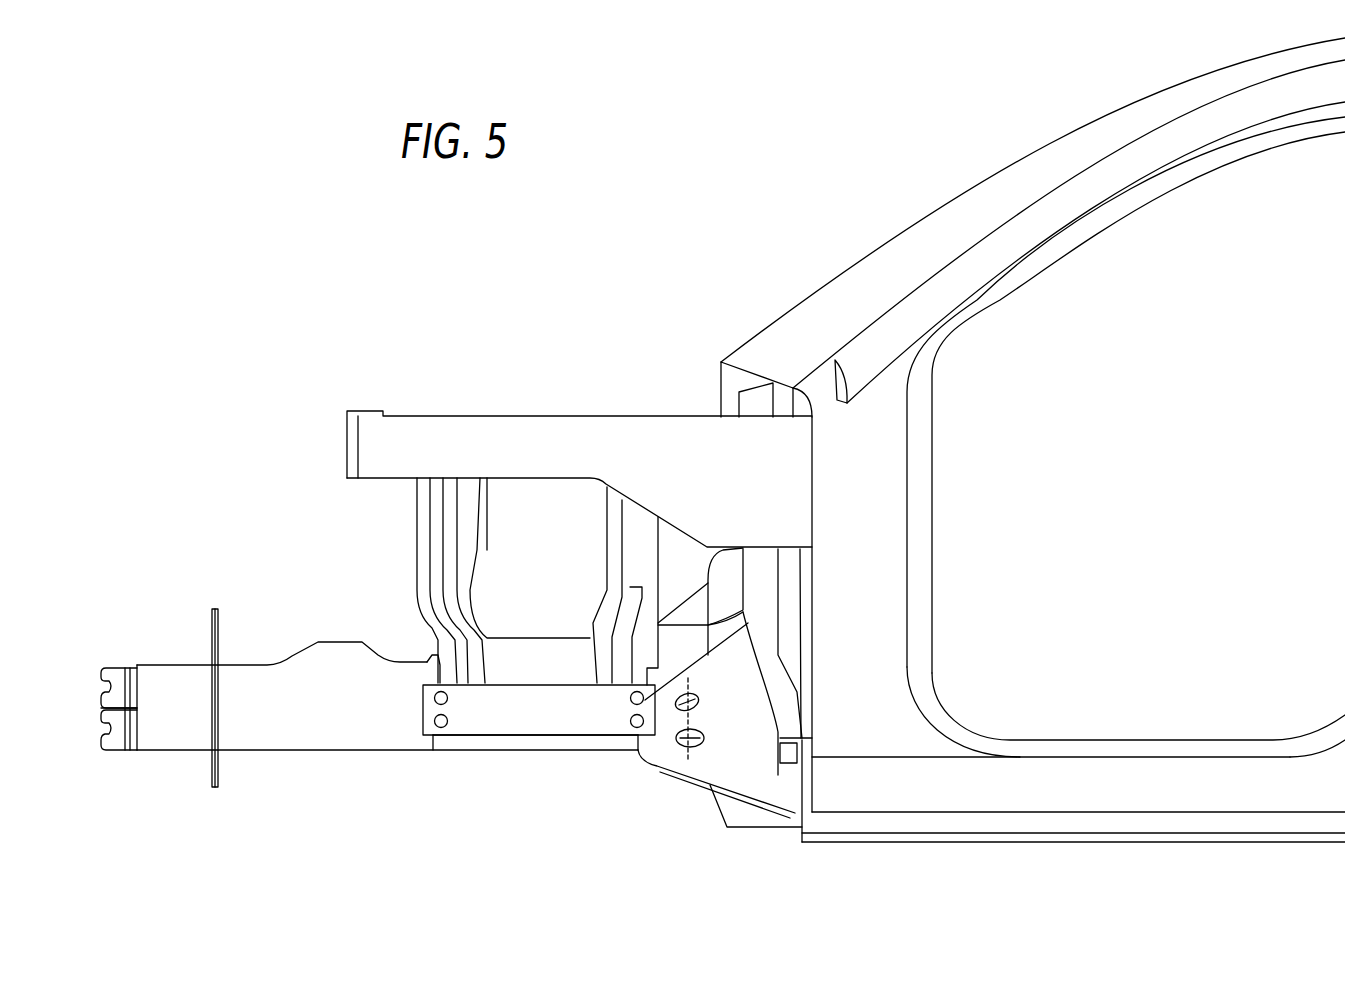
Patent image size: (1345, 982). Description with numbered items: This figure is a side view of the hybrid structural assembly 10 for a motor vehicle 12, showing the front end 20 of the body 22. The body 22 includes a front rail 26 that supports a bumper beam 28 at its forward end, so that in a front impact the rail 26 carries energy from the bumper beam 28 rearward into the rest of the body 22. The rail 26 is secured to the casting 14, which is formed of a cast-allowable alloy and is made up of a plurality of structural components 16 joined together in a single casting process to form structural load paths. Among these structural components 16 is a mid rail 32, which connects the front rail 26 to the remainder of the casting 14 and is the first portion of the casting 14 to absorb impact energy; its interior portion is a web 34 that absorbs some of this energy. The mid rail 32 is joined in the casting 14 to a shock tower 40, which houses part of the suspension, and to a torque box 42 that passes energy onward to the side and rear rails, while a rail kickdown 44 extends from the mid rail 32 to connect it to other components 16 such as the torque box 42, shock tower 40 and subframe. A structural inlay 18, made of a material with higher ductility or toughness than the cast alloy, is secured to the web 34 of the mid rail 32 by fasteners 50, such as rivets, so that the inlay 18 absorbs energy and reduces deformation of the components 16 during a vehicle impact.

The hybrid structural assembly 10 is at (250, 371).
The motor vehicle 12 is at (1097, 79).
The casting 14 is at (452, 370).
The structural components 16 is at (447, 533).
The structural inlay 18 is at (477, 723).
The front end 20 is at (220, 450).
The body 22 is at (1083, 792).
The rails 26 is at (266, 740).
The bumper beam 28 is at (98, 702).
The mid rails 32 is at (580, 740).
The web 34 is at (523, 667).
The shock towers 40 is at (543, 518).
The torque boxes 42 is at (763, 777).
The rail kickdowns 44 is at (689, 745).
The fastener 50 is at (434, 698).